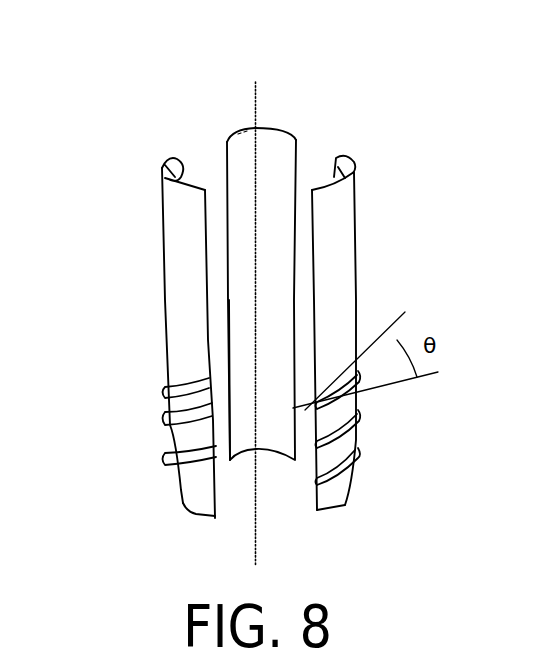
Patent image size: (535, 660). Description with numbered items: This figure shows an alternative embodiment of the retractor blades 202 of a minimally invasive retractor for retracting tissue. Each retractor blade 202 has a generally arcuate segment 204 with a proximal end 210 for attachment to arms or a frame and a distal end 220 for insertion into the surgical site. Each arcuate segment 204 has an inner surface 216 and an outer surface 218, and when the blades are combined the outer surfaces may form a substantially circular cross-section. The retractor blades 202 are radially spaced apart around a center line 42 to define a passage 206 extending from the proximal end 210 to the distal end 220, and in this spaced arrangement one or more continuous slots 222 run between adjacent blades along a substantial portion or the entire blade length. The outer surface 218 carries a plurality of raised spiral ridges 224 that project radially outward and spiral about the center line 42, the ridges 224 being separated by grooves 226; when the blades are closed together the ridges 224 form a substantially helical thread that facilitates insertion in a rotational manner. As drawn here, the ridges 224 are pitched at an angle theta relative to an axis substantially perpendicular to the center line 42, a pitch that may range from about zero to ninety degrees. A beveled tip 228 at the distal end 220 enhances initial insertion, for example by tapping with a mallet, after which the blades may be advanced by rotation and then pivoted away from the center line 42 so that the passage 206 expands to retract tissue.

The retractor blade 202 is at (133, 158).
The arcuate segment 204 is at (236, 148).
The passage 206 is at (288, 98).
The proximal end 210 is at (255, 128).
The inner surface 216 is at (243, 255).
The outer surface 218 is at (183, 317).
The distal end 220 is at (215, 515).
The continuous slot 222 is at (300, 167).
The spiral ridge 224 is at (167, 458).
The groove 226 is at (187, 443).
The beveled tip 228 is at (347, 505).
The center line 42 is at (257, 522).